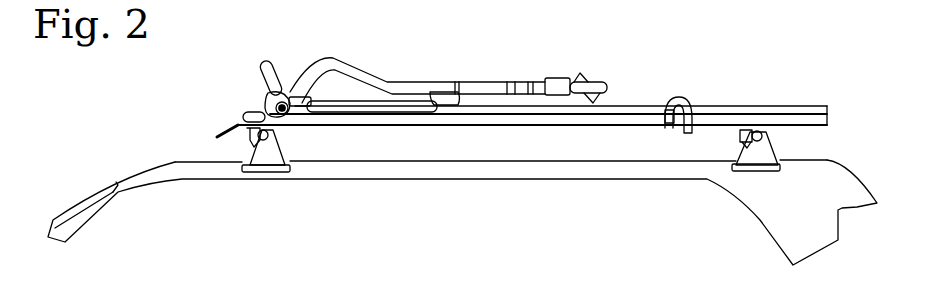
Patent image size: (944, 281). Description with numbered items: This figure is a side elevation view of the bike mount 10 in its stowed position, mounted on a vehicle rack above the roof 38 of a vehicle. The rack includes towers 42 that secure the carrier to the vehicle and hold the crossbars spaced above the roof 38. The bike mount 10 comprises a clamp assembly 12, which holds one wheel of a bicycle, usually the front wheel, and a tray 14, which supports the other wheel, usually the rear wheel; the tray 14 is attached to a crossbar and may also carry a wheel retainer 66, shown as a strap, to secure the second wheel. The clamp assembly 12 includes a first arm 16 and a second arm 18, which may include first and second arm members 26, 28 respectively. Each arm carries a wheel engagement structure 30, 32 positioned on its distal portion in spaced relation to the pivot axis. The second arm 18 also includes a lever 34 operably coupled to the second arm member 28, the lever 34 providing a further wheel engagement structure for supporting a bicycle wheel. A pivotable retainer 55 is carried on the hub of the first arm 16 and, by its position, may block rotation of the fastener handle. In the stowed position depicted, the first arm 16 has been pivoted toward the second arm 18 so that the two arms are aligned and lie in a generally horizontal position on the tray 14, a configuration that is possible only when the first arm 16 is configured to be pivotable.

The bike mount 10 is at (246, 52).
The clamp assembly 12 is at (359, 54).
The tray 14 is at (773, 112).
The first arm 16 is at (490, 74).
The second arm 18 is at (362, 116).
The first arm member 26 is at (480, 86).
The second arm member 28 is at (410, 106).
The wheel engagement structure 30 is at (582, 82).
The wheel engagement structure 32 is at (445, 105).
The lever 34 is at (265, 57).
The roof 38 is at (642, 168).
The towers 42 is at (268, 158).
The pivotable retainer 55 is at (263, 95).
The wheel retainer 66 is at (680, 98).